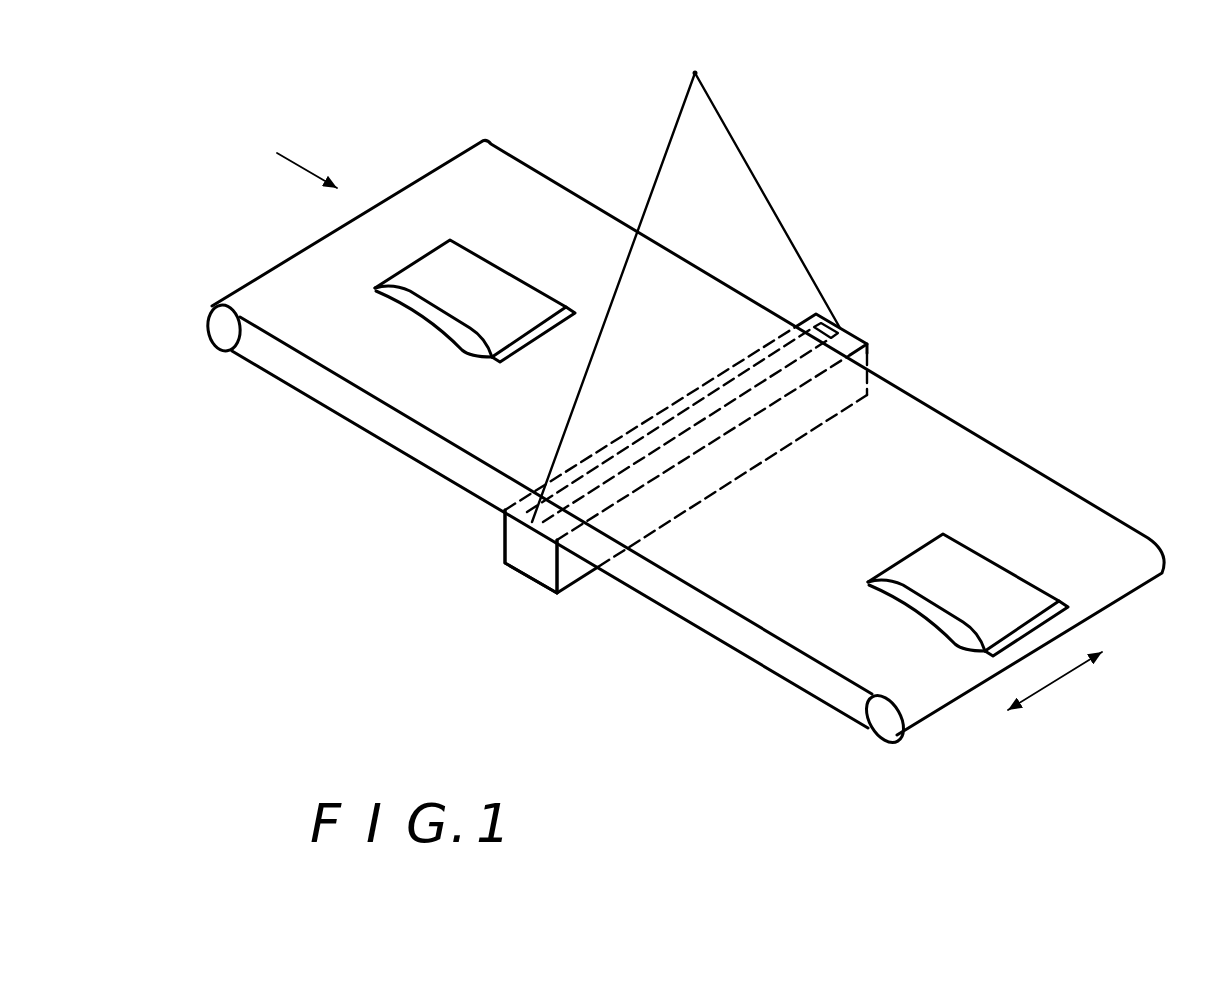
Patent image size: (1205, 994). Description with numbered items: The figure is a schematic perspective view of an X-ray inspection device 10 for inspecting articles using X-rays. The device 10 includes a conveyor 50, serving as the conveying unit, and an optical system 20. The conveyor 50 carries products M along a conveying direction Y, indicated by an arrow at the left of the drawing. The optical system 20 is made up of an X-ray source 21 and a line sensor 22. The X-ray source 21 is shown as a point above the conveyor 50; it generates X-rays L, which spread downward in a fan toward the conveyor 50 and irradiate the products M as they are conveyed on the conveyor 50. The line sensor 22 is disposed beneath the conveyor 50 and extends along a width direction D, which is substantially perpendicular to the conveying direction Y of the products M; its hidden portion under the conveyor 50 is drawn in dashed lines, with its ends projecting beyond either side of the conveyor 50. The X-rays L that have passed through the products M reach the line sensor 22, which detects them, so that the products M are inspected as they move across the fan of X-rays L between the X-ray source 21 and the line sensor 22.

The X-ray inspection device 10 is at (684, 391).
The optical system 20 is at (670, 322).
The X-ray source 21 is at (695, 73).
The line sensor 22 is at (528, 565).
The conveyor 50 is at (931, 445).
The X-rays L is at (773, 217).
The products M is at (493, 282).
The conveying direction Y is at (305, 170).
The width direction D is at (1052, 680).